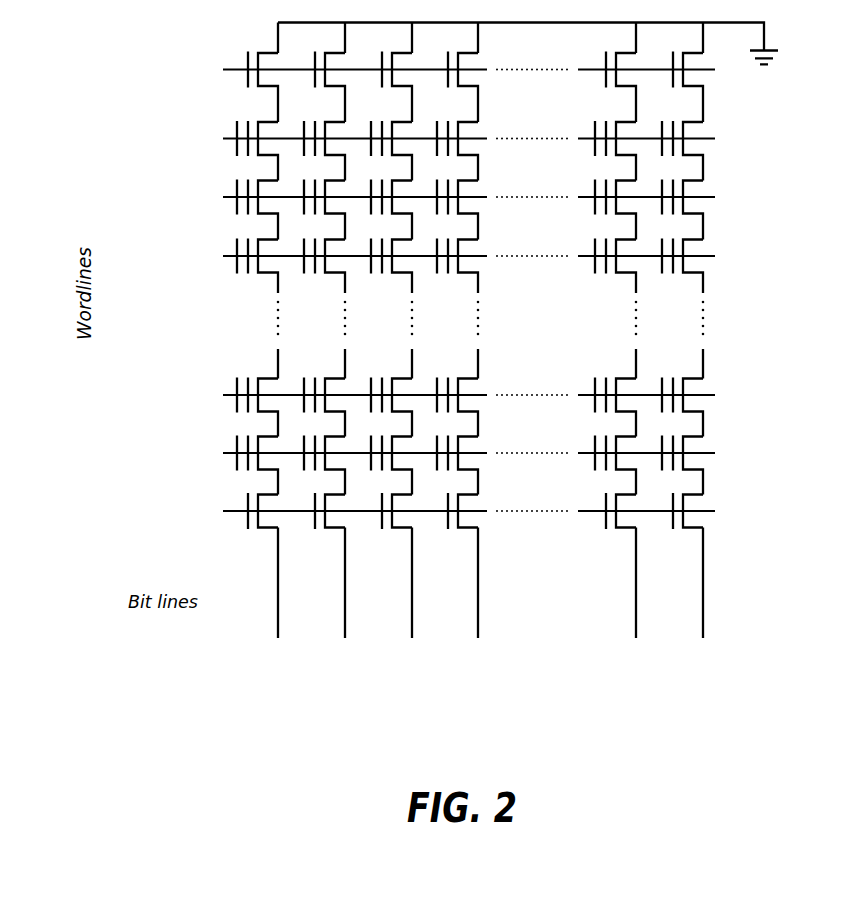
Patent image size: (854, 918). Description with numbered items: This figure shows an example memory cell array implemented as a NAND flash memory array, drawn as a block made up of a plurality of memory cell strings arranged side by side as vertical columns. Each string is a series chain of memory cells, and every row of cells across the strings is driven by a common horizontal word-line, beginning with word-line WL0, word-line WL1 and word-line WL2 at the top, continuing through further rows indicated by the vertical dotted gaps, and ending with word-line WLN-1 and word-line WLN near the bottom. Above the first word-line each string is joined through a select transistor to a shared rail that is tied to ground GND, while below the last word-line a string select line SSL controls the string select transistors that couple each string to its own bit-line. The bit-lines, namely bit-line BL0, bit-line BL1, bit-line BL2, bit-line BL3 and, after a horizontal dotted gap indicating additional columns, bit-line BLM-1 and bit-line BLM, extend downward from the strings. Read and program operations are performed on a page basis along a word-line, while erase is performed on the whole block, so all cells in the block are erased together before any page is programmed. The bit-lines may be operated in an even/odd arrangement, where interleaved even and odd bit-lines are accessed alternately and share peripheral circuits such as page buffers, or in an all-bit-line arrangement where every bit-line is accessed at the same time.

The ground GND is at (556, 45).
The word-line 0 WL0 is at (442, 147).
The word-line 1 WL1 is at (442, 200).
The word-line 2 WL2 is at (442, 250).
The word-line N-1 WLN-1 is at (429, 396).
The word-line N WLN is at (440, 448).
The string select line SSL is at (407, 514).
The bit-line 0 BL0 is at (265, 331).
The bit-line 1 BL1 is at (332, 331).
The bit-line 2 BL2 is at (399, 331).
The bit-line 3 BL3 is at (465, 331).
The bit-line M-1 BLM-1 is at (623, 331).
The bit-line M BLM is at (690, 331).